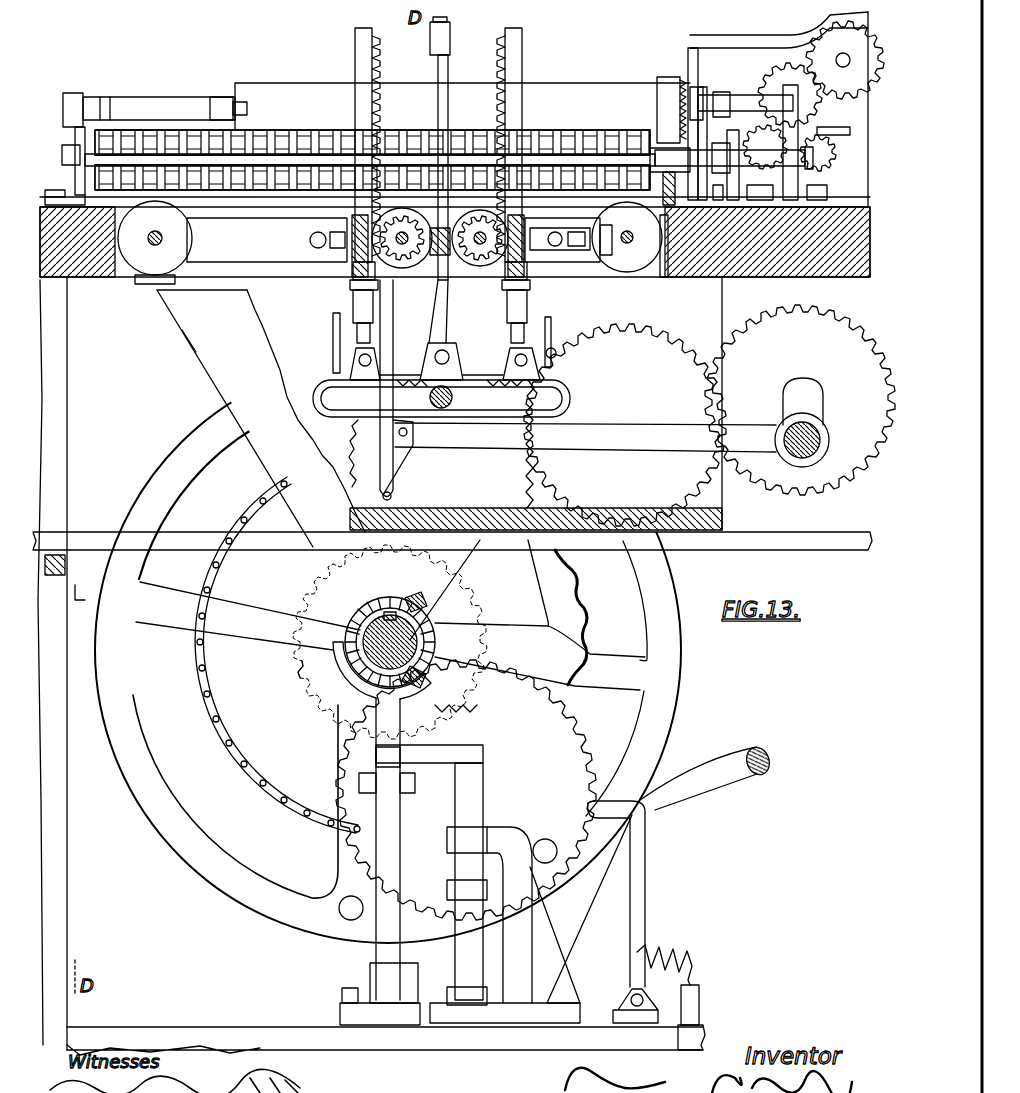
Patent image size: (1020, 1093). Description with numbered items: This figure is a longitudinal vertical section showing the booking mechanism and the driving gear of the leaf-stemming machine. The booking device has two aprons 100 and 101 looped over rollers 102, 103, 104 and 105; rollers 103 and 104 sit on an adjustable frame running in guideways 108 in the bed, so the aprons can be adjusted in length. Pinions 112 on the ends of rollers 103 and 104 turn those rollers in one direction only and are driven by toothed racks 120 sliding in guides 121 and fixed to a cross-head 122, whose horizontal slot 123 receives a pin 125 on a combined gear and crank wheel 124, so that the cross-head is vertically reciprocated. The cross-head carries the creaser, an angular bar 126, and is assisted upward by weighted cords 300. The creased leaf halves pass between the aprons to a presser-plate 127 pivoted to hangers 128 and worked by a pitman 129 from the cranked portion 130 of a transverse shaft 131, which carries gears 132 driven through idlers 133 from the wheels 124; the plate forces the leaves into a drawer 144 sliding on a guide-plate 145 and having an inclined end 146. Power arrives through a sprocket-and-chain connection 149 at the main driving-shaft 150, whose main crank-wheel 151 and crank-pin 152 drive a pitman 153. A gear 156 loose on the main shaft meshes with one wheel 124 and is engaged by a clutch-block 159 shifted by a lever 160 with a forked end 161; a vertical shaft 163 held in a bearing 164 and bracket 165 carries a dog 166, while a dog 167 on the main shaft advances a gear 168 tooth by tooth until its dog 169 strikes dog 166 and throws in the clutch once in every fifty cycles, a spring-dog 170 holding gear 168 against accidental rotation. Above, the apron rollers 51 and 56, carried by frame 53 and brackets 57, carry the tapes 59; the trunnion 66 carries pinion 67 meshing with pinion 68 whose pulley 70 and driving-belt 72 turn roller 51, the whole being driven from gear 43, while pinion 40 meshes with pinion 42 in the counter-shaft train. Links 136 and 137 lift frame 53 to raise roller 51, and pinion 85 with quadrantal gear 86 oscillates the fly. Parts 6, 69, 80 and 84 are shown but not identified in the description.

The frame base 6 is at (836, 262).
The pinion 40 is at (833, 53).
The pinion 42 is at (777, 80).
The gear 43 is at (760, 120).
The roller 51 is at (283, 88).
The frame 53 is at (173, 103).
The roller 56 is at (130, 130).
The brackets 57 is at (75, 130).
The tapes 59 is at (266, 140).
The trunnion 66 is at (688, 172).
The pinion 67 is at (648, 214).
The pinion 68 is at (660, 85).
The collar 69 is at (657, 94).
The pulley 70 is at (657, 90).
The driving-belt 72 is at (655, 83).
The shaft 80 is at (333, 157).
The shaft 84 is at (695, 150).
The pinion 85 is at (828, 164).
The quadrantal gear 86 is at (839, 149).
The apron 100 is at (227, 277).
The apron 101 is at (612, 272).
The roller 102 is at (136, 257).
The roller 103 is at (397, 205).
The roller 104 is at (487, 205).
The roller 105 is at (652, 258).
The guideways 108 is at (248, 218).
The pinions 112 is at (445, 322).
The toothed racks 120 is at (375, 42).
The guides 121 is at (300, 233).
The cross-head 122 is at (571, 398).
The horizontal slot 123 is at (554, 390).
The combined gear and crank wheel 124 is at (342, 482).
The pin 125 is at (446, 413).
The angular bar 126 is at (448, 68).
The presser-plate 127 is at (388, 292).
The hangers 128 is at (410, 330).
The pitman 129 is at (613, 440).
The cranked portion 130 is at (813, 455).
The transverse shaft 131 is at (801, 390).
The gears 132 is at (773, 473).
The idlers 133 is at (668, 338).
The link 136 is at (688, 40).
The link 137 is at (712, 40).
The drawer 144 is at (220, 375).
The guide-plate 145 is at (90, 540).
The inclined end 146 is at (164, 353).
The sprocket-and-chain connection 149 is at (222, 744).
The main driving-shaft 150 is at (345, 592).
The main crank-wheel 151 is at (137, 773).
The crank-pin 152 is at (345, 925).
The pitman 153 is at (720, 768).
The gear 156 is at (306, 700).
The clutch-block 159 is at (343, 706).
The lever 160 is at (394, 836).
The forked end 161 is at (460, 713).
The vertical shaft 163 is at (463, 953).
The bearing 164 is at (467, 1005).
The bracket 165 is at (550, 977).
The dog 166 is at (457, 890).
The dog 167 is at (423, 640).
The gear 168 is at (575, 742).
The dog 169 is at (553, 861).
The spring-dog 170 is at (640, 888).
The weighted cords 300 is at (337, 336).